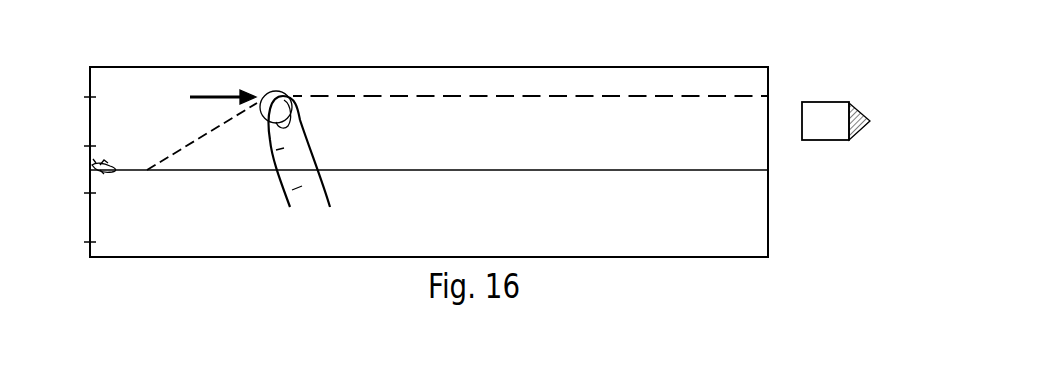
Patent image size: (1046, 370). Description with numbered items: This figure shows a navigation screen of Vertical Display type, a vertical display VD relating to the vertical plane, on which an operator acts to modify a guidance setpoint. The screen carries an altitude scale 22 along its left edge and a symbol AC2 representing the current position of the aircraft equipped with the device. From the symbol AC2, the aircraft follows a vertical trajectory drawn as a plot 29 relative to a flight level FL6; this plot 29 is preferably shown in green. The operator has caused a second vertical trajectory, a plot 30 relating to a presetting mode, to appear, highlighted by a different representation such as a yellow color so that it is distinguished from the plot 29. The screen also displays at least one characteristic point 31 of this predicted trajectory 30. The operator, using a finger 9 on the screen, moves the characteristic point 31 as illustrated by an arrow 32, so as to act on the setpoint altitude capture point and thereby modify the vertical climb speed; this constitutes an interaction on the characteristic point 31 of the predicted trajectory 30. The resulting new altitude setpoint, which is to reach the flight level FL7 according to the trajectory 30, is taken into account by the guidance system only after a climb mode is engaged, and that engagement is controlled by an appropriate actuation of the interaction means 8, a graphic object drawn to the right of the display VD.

The altitude scale 22 is at (77, 58).
The arrow 32 is at (212, 93).
The characteristic point 31 is at (279, 91).
The predicted trajectory 30 is at (353, 94).
The flight level FL7 is at (546, 80).
The flight level FL6 is at (236, 190).
The finger 9 is at (310, 160).
The plot 29 is at (728, 172).
The vertical display VD is at (664, 258).
The symbol AC2 is at (100, 170).
The interaction means 8 is at (829, 101).